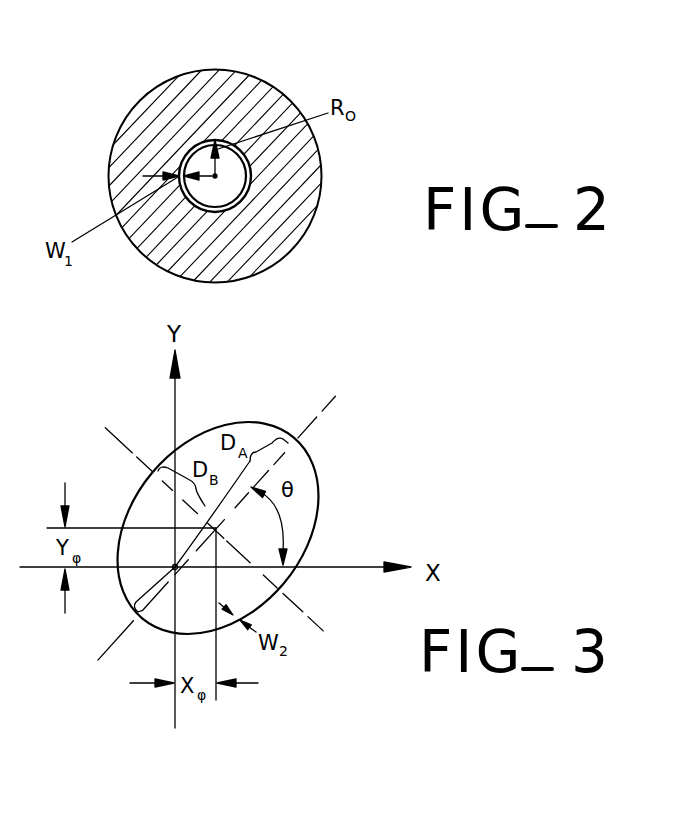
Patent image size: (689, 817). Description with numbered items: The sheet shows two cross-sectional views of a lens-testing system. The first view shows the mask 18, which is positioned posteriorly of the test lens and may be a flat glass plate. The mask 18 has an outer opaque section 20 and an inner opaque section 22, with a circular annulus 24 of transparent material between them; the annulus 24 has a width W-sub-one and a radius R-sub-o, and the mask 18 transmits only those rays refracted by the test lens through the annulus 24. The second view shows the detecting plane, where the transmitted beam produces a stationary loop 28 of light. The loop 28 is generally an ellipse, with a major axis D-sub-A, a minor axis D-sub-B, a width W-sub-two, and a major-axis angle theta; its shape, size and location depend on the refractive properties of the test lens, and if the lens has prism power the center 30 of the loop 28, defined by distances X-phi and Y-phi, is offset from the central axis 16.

In FIG. 2, the central axis 16 is at (217, 178).
In FIG. 3, the central axis 16 is at (175, 567).
In FIG. 2, the mask 18 is at (140, 63).
In FIG. 2, the opaque section 20 is at (236, 94).
In FIG. 2, the opaque section 22 is at (249, 166).
In FIG. 2, the circular annulus 24 is at (236, 203).
In FIG. 3, the loop 28 is at (258, 425).
In FIG. 3, the center 30 is at (217, 533).